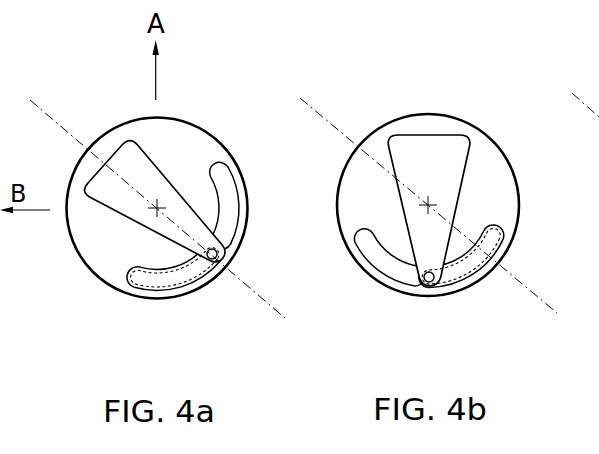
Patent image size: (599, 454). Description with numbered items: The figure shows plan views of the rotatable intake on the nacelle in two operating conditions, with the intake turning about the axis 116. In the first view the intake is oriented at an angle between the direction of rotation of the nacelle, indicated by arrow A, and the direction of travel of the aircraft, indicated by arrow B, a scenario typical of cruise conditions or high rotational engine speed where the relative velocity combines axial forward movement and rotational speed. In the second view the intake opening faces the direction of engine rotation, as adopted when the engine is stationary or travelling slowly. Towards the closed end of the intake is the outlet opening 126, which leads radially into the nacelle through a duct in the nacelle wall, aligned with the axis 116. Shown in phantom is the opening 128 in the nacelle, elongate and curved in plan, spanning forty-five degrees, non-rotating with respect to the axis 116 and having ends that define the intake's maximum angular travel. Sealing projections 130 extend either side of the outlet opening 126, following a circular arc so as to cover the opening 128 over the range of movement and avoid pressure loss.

In FIG. 4a, the axis 116 is at (158, 206).
In FIG. 4a, the outlet opening 126 is at (218, 255).
In FIG. 4b, the outlet opening 126 is at (432, 286).
In FIG. 4a, the opening 128 is at (175, 277).
In FIG. 4b, the opening 128 is at (480, 283).
In FIG. 4a, the sealing projections 130 is at (230, 195).
In FIG. 4b, the sealing projections 130 is at (383, 262).